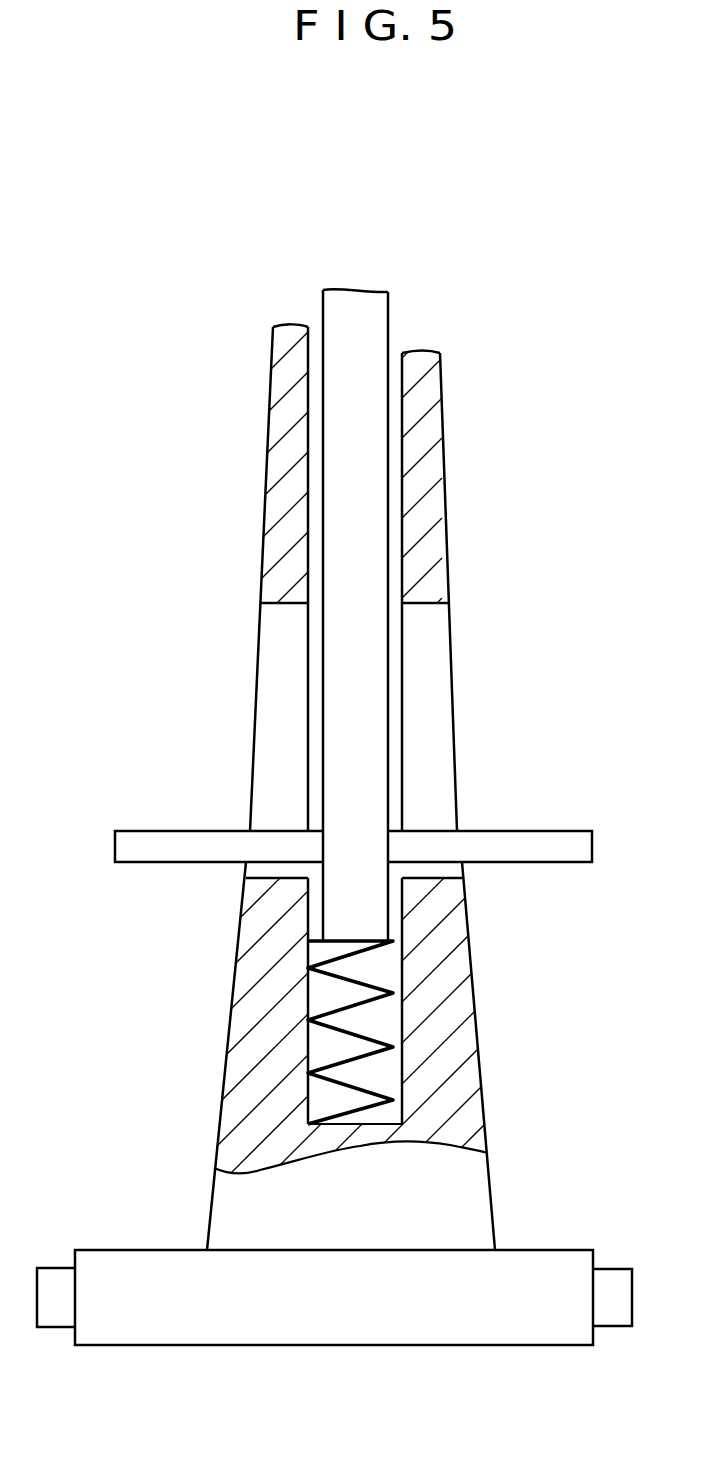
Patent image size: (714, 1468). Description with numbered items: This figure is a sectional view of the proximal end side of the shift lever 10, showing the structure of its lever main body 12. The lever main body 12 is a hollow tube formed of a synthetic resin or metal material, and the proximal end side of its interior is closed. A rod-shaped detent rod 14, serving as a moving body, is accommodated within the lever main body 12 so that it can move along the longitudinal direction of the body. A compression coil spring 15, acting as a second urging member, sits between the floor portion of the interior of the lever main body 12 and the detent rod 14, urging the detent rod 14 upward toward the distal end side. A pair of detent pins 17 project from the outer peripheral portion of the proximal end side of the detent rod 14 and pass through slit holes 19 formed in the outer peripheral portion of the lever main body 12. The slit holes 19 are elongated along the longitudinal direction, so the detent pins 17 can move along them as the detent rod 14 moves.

The shift lever 10 is at (334, 834).
The lever main body 12 is at (440, 449).
The detent rod 14 is at (372, 388).
The compression coil spring 15 is at (363, 1030).
The detent pins 17 is at (178, 831).
The slit holes 19 is at (420, 604).